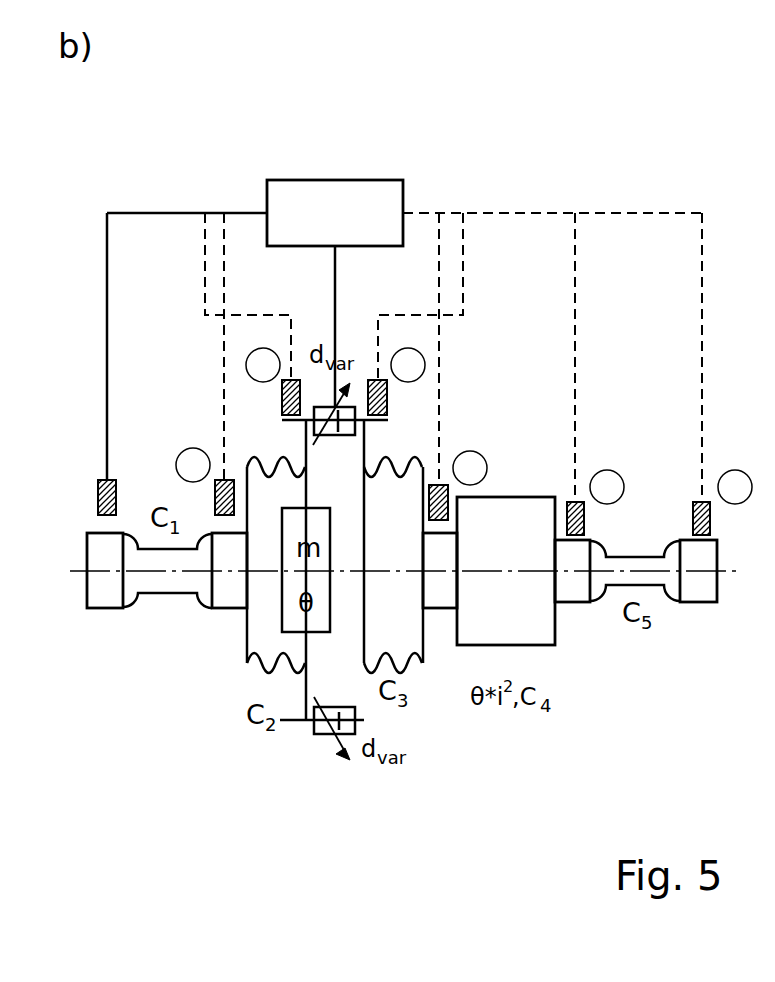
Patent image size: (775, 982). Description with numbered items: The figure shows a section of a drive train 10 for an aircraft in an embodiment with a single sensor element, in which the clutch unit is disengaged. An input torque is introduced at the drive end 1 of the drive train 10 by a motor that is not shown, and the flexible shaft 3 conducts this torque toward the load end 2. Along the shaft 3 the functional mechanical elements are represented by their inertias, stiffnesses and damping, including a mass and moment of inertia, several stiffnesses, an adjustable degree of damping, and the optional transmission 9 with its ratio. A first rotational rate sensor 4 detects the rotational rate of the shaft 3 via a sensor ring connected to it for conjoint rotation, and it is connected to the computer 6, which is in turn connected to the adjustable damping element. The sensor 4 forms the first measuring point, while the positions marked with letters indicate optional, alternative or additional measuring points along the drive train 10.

The drive end 1 is at (698, 588).
The load end 2 is at (107, 593).
The flexible shaft 3 is at (230, 612).
The first rotational rate sensor 4 is at (99, 492).
The computer 6 is at (333, 203).
The transmission 9 is at (483, 622).
The drive train 10 is at (547, 193).